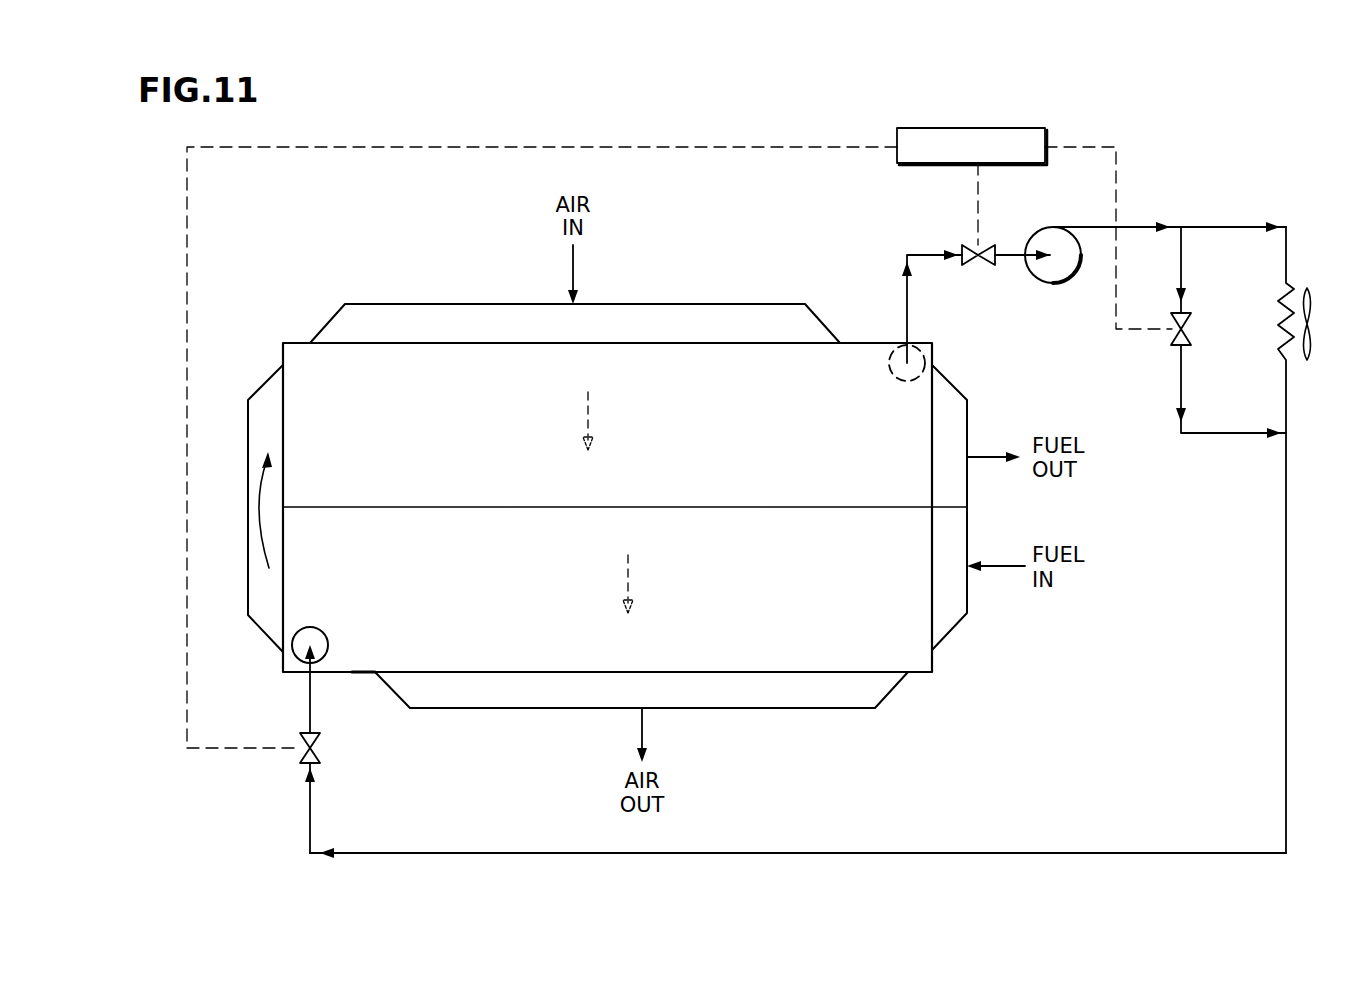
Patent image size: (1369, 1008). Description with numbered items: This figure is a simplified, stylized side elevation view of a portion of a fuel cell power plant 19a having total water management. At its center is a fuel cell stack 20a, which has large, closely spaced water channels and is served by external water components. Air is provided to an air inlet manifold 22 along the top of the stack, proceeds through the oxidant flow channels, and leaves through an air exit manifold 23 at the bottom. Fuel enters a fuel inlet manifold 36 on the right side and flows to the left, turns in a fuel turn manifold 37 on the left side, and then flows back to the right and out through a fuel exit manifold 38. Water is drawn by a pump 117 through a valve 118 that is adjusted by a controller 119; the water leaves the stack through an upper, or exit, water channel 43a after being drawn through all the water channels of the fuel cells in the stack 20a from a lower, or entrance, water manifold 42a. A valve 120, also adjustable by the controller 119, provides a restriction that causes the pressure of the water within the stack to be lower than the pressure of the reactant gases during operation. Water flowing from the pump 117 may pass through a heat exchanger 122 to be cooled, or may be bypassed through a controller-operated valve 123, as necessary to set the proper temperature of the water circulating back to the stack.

The fuel cell power plant 19a is at (362, 254).
The fuel cell stack 20a is at (671, 466).
The air inlet manifold 22 is at (650, 315).
The air exit manifold 23 is at (710, 693).
The fuel inlet manifold 36 is at (955, 600).
The fuel turn manifold 37 is at (260, 442).
The fuel exit manifold 38 is at (957, 425).
The lower water manifold 42a is at (294, 650).
The upper water channel 43a is at (920, 345).
The pump 117 is at (1050, 275).
The valve 118 is at (975, 265).
The controller 119 is at (962, 128).
The valve 120 is at (318, 745).
The heat exchanger 122 is at (1298, 283).
The valve 123 is at (1190, 328).